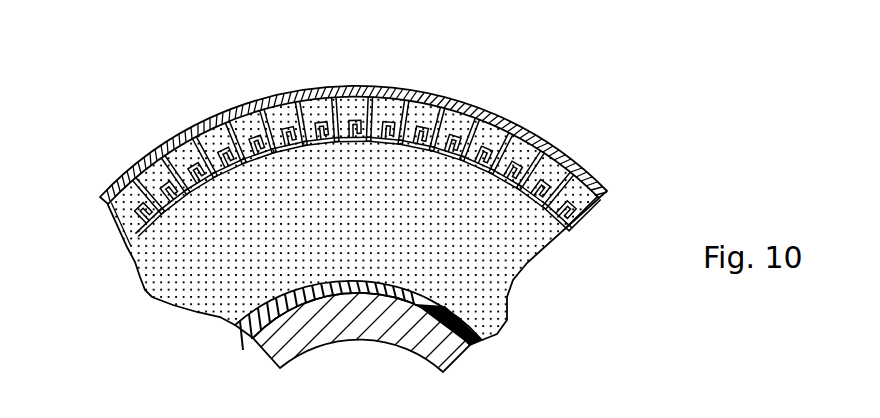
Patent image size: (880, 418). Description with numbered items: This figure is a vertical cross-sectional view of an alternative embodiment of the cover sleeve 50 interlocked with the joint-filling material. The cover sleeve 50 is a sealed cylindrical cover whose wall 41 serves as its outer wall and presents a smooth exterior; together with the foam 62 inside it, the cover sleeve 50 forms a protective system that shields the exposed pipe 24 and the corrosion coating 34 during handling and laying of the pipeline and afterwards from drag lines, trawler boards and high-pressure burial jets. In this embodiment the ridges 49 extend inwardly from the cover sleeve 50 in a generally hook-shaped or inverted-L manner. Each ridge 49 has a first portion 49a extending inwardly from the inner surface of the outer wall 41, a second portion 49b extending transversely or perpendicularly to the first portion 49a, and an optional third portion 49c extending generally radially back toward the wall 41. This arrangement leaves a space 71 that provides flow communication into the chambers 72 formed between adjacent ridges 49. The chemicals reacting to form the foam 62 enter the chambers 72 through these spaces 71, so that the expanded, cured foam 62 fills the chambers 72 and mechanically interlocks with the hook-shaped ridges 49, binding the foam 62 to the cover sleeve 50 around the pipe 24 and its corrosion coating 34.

The exposed pipe 24 is at (437, 350).
The corrosion coating 34 is at (270, 319).
The wall 41 is at (262, 99).
The ridge 49 is at (593, 213).
The first portion 49a is at (143, 205).
The second portion 49b is at (222, 217).
The third portion 49c is at (242, 157).
The cover sleeve 50 is at (307, 72).
The foam 62 is at (495, 258).
The space 71 is at (447, 140).
The chambers 72 is at (167, 140).